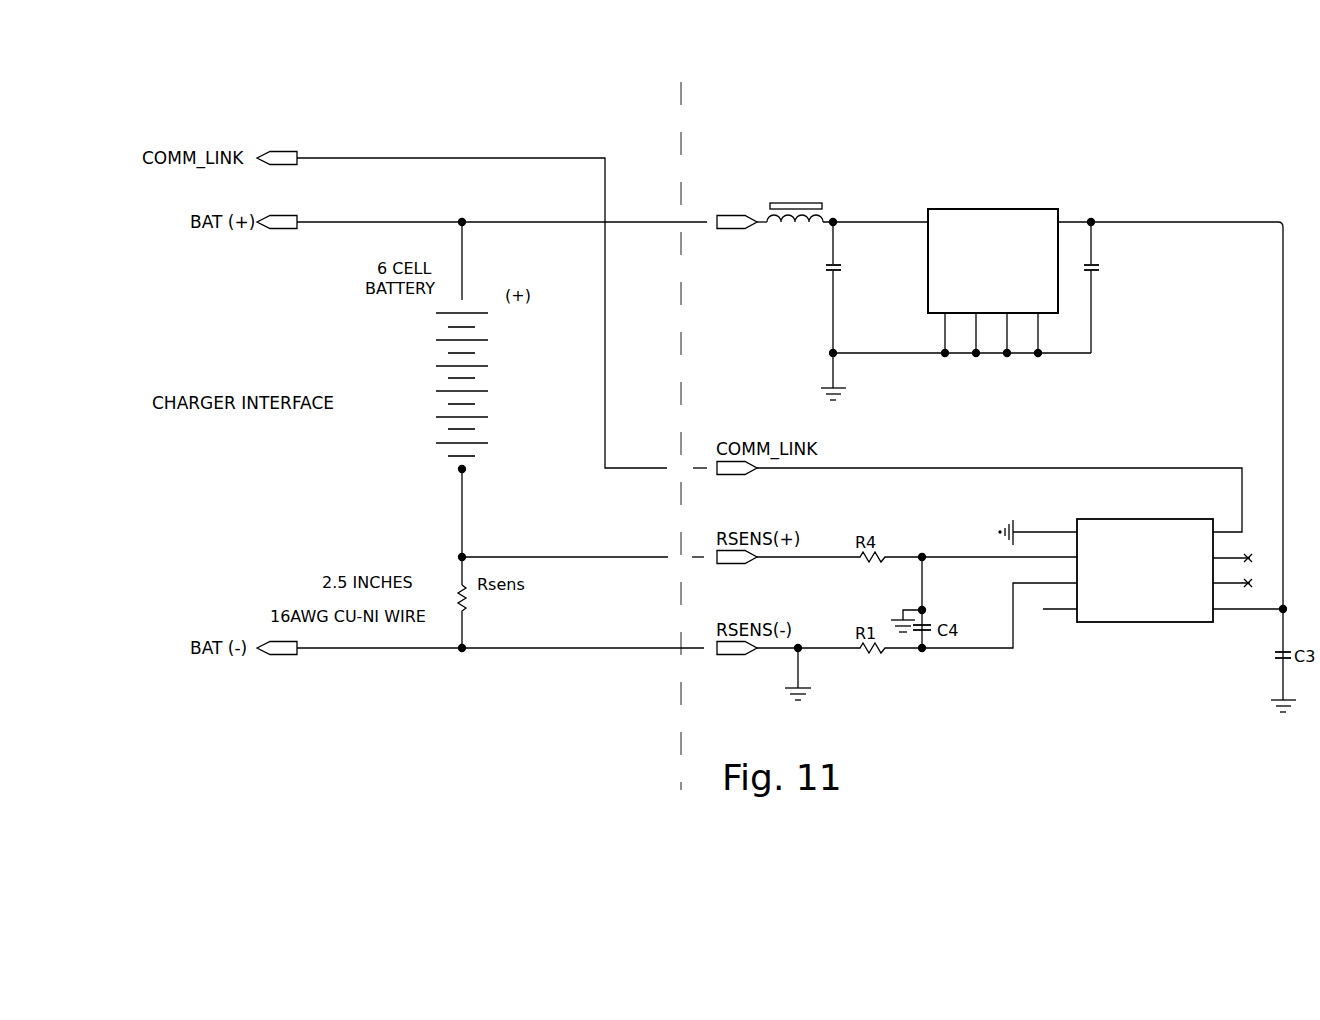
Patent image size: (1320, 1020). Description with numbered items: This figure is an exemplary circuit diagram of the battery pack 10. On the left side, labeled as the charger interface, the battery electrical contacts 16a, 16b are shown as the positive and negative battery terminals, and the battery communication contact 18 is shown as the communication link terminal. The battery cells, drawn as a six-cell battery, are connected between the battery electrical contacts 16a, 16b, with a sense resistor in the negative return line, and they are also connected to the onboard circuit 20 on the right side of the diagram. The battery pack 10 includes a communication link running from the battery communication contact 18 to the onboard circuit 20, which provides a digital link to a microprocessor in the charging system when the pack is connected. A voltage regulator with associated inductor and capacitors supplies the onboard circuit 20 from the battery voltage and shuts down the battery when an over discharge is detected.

The battery pack 10 is at (893, 152).
The battery communication contact 18 is at (285, 152).
The battery electrical contact 16a is at (285, 230).
The battery electrical contact 16b is at (282, 656).
The onboard circuit 20 is at (1176, 622).